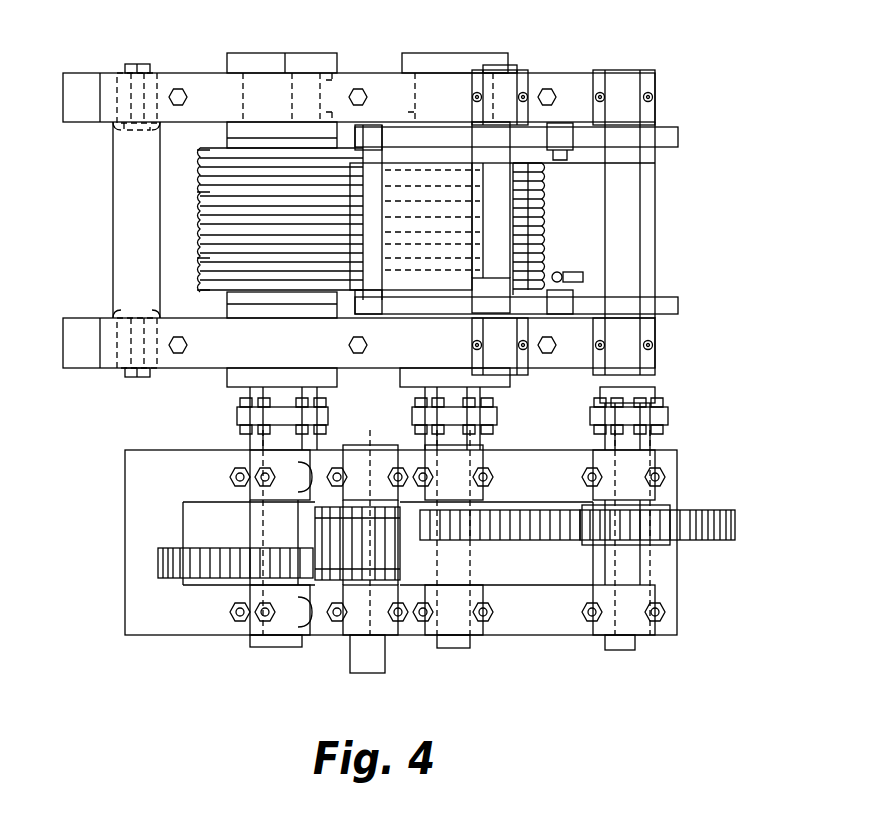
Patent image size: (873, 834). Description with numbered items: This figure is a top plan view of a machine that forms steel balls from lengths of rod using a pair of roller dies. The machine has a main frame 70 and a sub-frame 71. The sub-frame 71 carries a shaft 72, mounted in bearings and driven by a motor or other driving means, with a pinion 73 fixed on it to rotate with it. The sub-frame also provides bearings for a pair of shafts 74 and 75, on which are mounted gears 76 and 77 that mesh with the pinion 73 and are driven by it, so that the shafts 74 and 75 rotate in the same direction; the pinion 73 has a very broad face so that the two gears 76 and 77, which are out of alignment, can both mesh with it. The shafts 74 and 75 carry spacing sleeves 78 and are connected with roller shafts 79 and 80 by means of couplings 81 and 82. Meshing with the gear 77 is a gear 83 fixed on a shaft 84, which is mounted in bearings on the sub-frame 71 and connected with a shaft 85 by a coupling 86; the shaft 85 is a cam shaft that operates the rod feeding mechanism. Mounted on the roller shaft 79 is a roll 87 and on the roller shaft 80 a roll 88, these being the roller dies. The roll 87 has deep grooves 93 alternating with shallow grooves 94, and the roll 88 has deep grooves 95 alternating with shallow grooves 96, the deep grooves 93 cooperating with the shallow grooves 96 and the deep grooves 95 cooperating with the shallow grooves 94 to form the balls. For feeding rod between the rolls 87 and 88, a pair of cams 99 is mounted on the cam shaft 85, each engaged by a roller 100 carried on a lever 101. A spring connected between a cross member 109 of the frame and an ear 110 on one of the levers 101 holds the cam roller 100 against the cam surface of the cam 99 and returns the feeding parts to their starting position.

The main frame 70 is at (200, 362).
The sub-frame 71 is at (188, 627).
The shaft 72 is at (370, 673).
The pinion 73 is at (410, 557).
The shaft 74 is at (285, 648).
The shaft 75 is at (453, 648).
The gear 76 is at (160, 568).
The gear 77 is at (530, 540).
The spacing sleeves 78 is at (278, 520).
The roller shaft 79 is at (248, 78).
The roller shaft 80 is at (418, 80).
The coupling 81 is at (237, 418).
The coupling 82 is at (412, 416).
The gear 83 is at (690, 537).
The shaft 84 is at (635, 640).
The shaft 85 is at (632, 382).
The coupling 86 is at (668, 418).
The roll 87 is at (248, 222).
The roll 88 is at (605, 165).
The deep grooves 93 is at (197, 175).
The shallow grooves 94 is at (197, 192).
The deep grooves 95 is at (525, 175).
The shallow grooves 96 is at (538, 220).
The cams 99 is at (672, 137).
The roller 100 is at (562, 123).
The levers 101 is at (538, 105).
The cross member 109 is at (605, 240).
The ear 110 is at (563, 273).